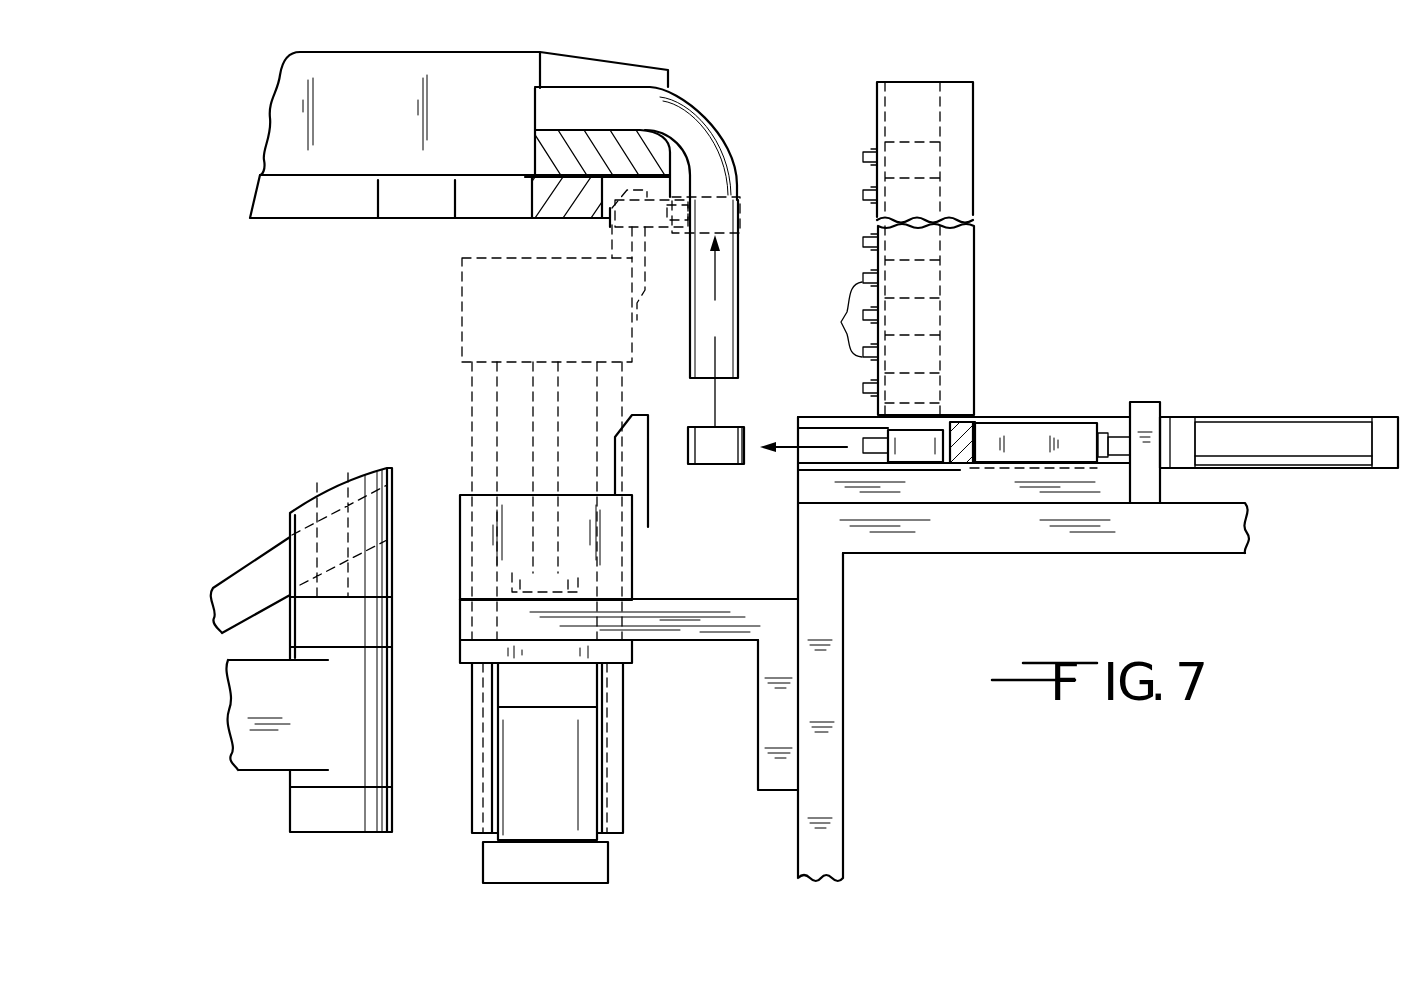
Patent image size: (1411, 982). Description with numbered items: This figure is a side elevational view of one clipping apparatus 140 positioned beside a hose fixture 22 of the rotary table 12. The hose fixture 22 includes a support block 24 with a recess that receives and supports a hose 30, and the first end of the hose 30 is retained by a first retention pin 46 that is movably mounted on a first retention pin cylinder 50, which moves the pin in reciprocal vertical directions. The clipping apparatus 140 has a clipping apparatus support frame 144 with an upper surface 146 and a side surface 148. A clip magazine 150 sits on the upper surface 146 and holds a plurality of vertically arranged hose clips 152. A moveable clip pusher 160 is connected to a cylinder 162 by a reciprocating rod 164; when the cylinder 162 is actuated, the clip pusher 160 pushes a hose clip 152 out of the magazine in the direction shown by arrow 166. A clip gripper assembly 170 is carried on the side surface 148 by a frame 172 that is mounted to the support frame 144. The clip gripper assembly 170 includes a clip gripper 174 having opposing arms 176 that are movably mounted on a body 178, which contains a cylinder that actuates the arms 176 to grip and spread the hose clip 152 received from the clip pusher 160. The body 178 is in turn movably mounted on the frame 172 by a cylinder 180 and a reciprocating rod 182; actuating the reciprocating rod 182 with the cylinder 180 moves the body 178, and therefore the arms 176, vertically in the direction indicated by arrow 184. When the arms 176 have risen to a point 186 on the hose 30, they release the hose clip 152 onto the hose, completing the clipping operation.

The rotary table 12 is at (266, 220).
The hose fixture 22 is at (302, 52).
The support block 24 is at (643, 62).
The hose 30 is at (725, 138).
The first retention pin 46 is at (337, 473).
The first retention pin cylinder 50 is at (290, 808).
The clipping apparatus 140 is at (1225, 252).
The clipping apparatus support frame 144 is at (1110, 555).
The upper surface 146 is at (1245, 500).
The side surface 148 is at (796, 550).
The clip magazine 150 is at (973, 123).
The hose clip 152 is at (743, 197).
The clip pusher 160 is at (958, 463).
The cylinder 162 is at (1318, 417).
The reciprocating rod 164 is at (1112, 440).
The arrow 166 is at (822, 447).
The clip gripper assembly 170 is at (658, 800).
The frame 172 is at (756, 695).
The clip gripper 174 is at (457, 563).
The opposing arms 176 is at (648, 523).
The body 178 is at (458, 318).
The cylinder 180 is at (482, 865).
The reciprocating rod 182 is at (533, 428).
The arrow 184 is at (718, 346).
The point 186 is at (741, 222).